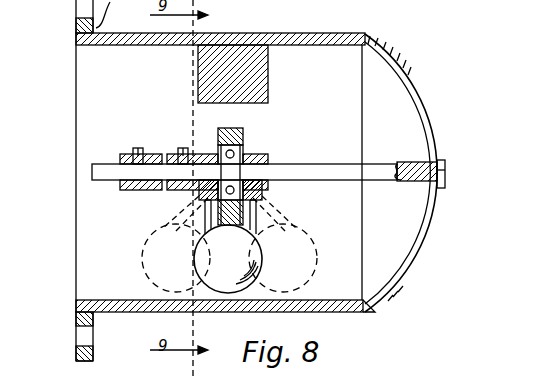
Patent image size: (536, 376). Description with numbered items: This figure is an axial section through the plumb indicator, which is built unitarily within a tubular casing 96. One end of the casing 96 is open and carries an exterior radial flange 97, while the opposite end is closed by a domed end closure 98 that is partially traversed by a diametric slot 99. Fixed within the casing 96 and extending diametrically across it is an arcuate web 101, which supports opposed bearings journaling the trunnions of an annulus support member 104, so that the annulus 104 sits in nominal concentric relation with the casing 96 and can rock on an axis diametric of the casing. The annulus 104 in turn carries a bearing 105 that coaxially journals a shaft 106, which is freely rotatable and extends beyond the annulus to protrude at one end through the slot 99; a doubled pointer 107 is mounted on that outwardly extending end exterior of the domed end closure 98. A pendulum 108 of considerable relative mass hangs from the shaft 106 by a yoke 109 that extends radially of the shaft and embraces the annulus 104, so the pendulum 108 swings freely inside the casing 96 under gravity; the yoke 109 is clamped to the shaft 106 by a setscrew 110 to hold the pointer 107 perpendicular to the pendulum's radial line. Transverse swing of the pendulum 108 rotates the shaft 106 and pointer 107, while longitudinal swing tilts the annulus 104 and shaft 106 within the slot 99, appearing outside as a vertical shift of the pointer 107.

The tubular casing 96 is at (313, 38).
The exterior radial flange 97 is at (95, 352).
The domed end closure 98 is at (400, 239).
The diametric slot 99 is at (421, 108).
The arcuate web 101 is at (262, 82).
The annulus support member 104 is at (218, 130).
The bearing 105 is at (259, 186).
The shaft 106 is at (313, 164).
The doubled pointer 107 is at (446, 166).
The pendulum 108 is at (228, 259).
The yoke 109 is at (199, 228).
The setscrew 110 is at (184, 149).